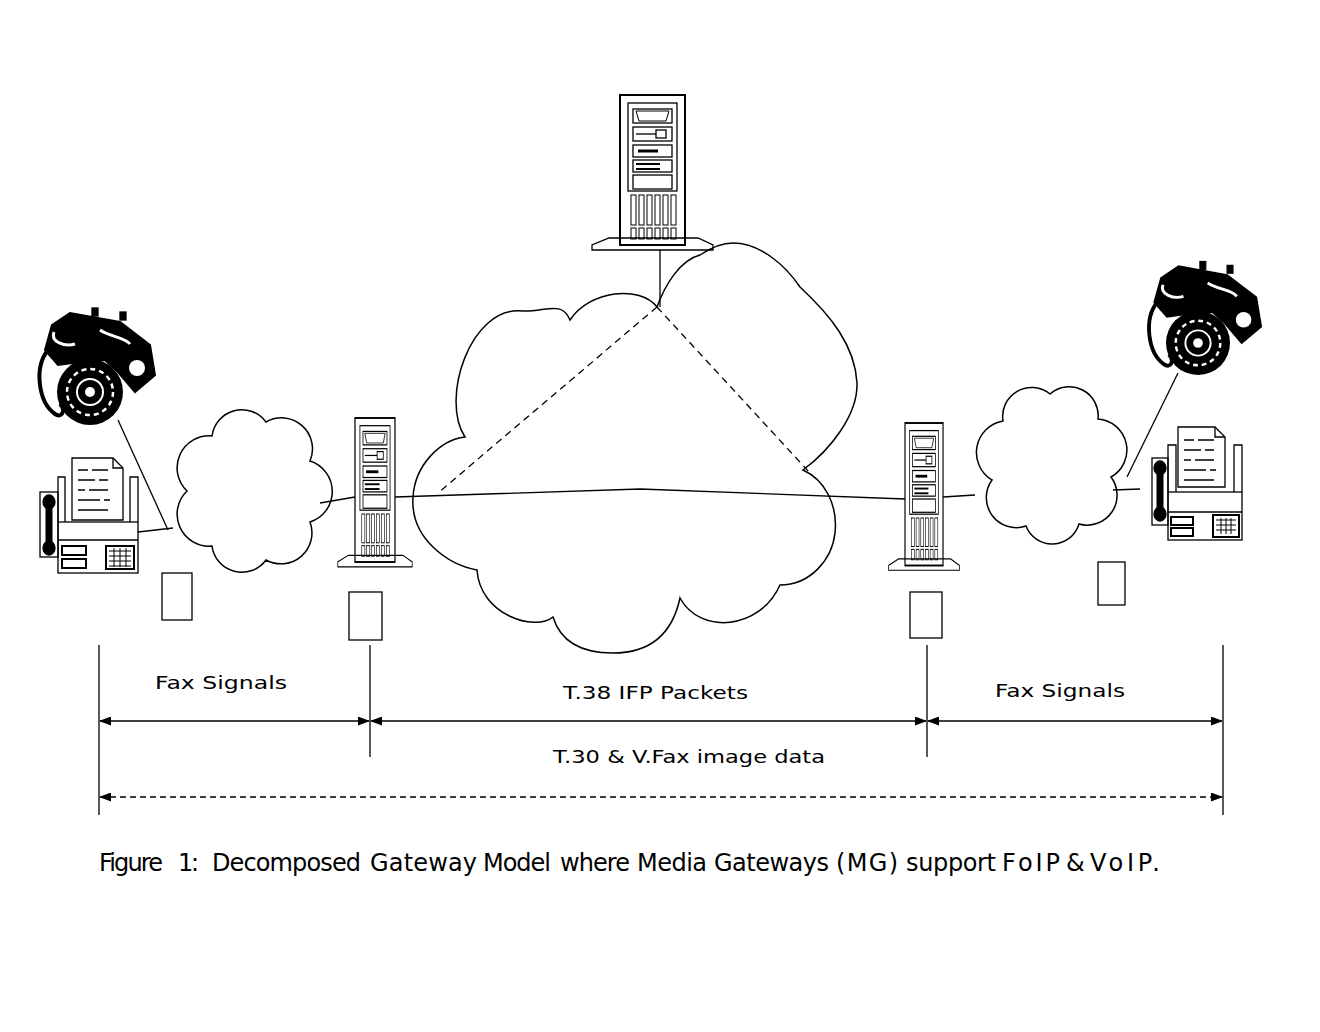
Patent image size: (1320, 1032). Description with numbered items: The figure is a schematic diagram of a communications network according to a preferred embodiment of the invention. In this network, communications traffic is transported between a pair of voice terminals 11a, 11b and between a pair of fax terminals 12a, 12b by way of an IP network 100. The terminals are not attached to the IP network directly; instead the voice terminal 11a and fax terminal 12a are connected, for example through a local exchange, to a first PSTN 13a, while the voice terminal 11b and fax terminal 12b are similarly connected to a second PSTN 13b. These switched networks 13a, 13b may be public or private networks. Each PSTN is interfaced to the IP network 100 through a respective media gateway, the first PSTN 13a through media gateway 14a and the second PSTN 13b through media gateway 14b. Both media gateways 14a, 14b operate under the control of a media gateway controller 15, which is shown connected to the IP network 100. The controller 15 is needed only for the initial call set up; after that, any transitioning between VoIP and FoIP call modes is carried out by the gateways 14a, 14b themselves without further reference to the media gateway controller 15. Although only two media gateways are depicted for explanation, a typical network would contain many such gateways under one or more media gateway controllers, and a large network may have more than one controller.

The voice terminal 11a is at (120, 328).
The voice terminal 11b is at (1157, 280).
The fax terminal 12a is at (127, 577).
The fax terminal 12b is at (1193, 538).
The PSTN 13a is at (247, 423).
The PSTN 13b is at (1050, 547).
The media gateway 14a is at (395, 573).
The media gateway 14b is at (930, 418).
The media gateway controller 15 is at (687, 177).
The IP network 100 is at (462, 345).